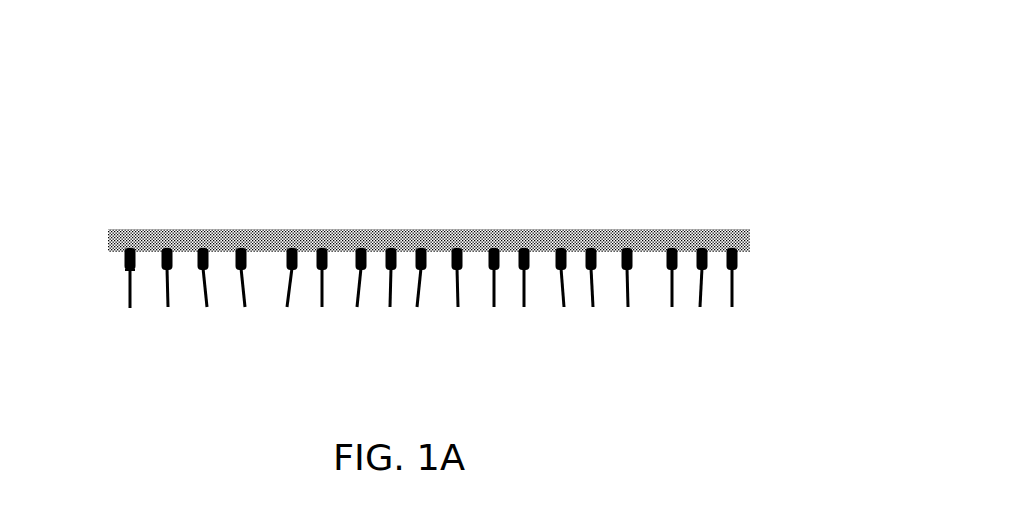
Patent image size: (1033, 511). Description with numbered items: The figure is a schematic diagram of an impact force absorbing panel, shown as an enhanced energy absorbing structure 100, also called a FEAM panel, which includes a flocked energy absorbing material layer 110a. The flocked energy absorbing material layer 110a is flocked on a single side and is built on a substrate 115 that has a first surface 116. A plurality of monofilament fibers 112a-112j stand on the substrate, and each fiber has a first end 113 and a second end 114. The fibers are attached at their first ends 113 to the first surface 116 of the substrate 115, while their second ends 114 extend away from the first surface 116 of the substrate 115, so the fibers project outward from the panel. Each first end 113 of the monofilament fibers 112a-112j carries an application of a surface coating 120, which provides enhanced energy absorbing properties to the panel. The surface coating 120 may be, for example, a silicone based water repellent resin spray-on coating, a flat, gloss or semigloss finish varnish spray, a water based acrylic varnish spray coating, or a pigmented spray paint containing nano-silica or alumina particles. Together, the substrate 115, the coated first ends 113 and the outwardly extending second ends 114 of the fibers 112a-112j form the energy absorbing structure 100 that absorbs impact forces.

The enhanced energy absorbing structure 100 is at (464, 145).
The flocked energy absorbing material layer 110a is at (736, 314).
The monofilament fiber 112a is at (125, 310).
The monofilament fiber 112j is at (721, 309).
The first end 113 is at (125, 252).
The second end 114 is at (130, 308).
The substrate 115 is at (262, 251).
The first surface 116 is at (107, 249).
The surface coating 120 is at (124, 271).